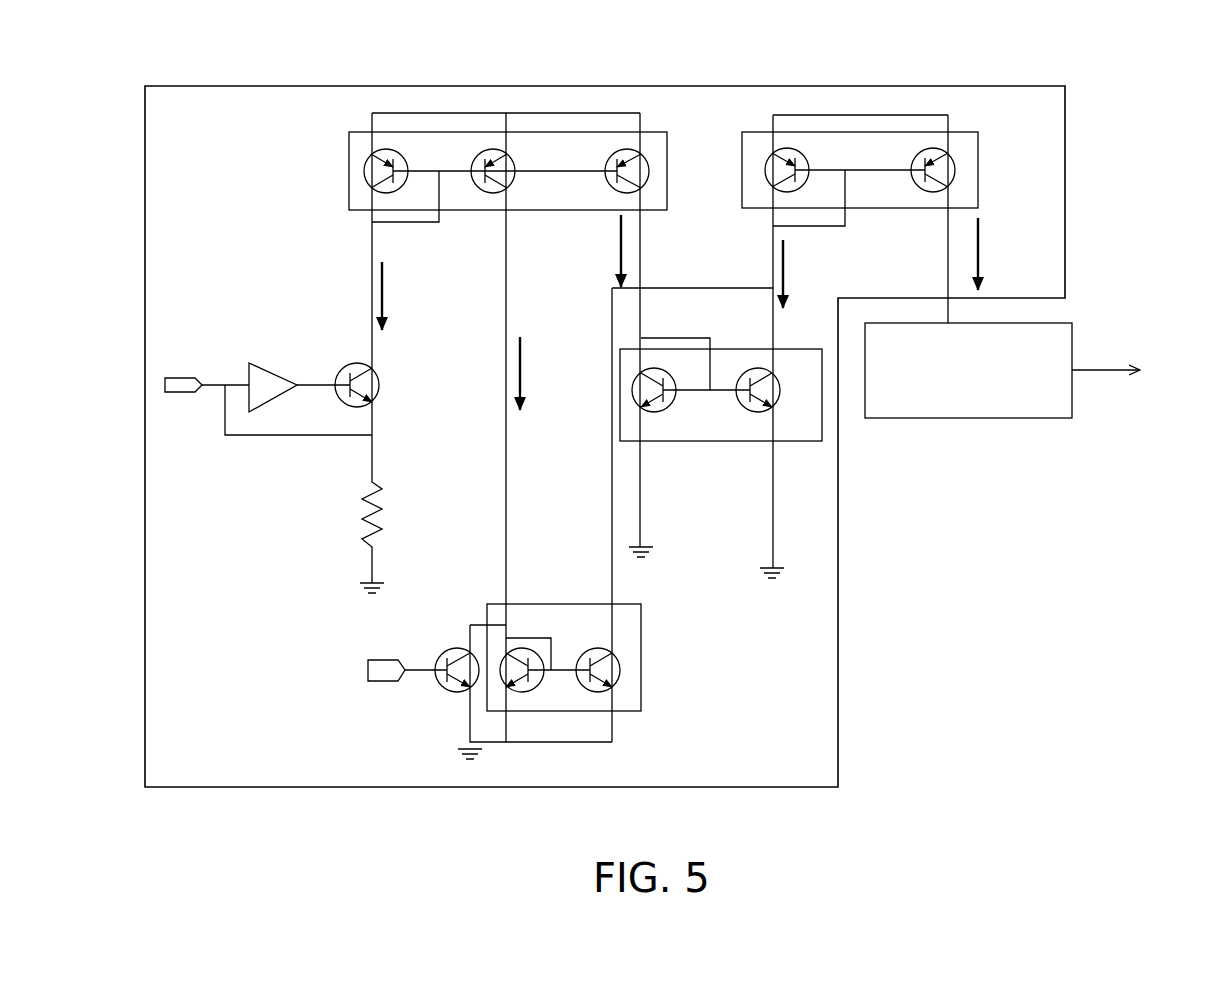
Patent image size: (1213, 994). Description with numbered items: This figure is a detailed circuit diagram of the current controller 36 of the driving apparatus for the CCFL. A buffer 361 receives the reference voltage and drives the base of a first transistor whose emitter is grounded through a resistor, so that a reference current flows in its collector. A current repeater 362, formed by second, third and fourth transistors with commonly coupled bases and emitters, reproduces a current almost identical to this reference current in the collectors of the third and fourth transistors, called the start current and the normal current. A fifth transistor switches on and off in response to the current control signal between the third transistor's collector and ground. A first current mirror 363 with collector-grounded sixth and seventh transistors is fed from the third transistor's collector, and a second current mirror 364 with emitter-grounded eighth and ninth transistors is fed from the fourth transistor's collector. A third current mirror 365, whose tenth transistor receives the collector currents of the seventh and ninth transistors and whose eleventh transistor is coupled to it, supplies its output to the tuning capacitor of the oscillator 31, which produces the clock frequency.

The current controller 36 is at (810, 86).
The buffer 361 is at (277, 368).
The current repeater 362 is at (349, 168).
The first current mirror 363 is at (641, 657).
The second current mirror 364 is at (735, 441).
The third current mirror 365 is at (978, 178).
The oscillator 31 is at (965, 420).